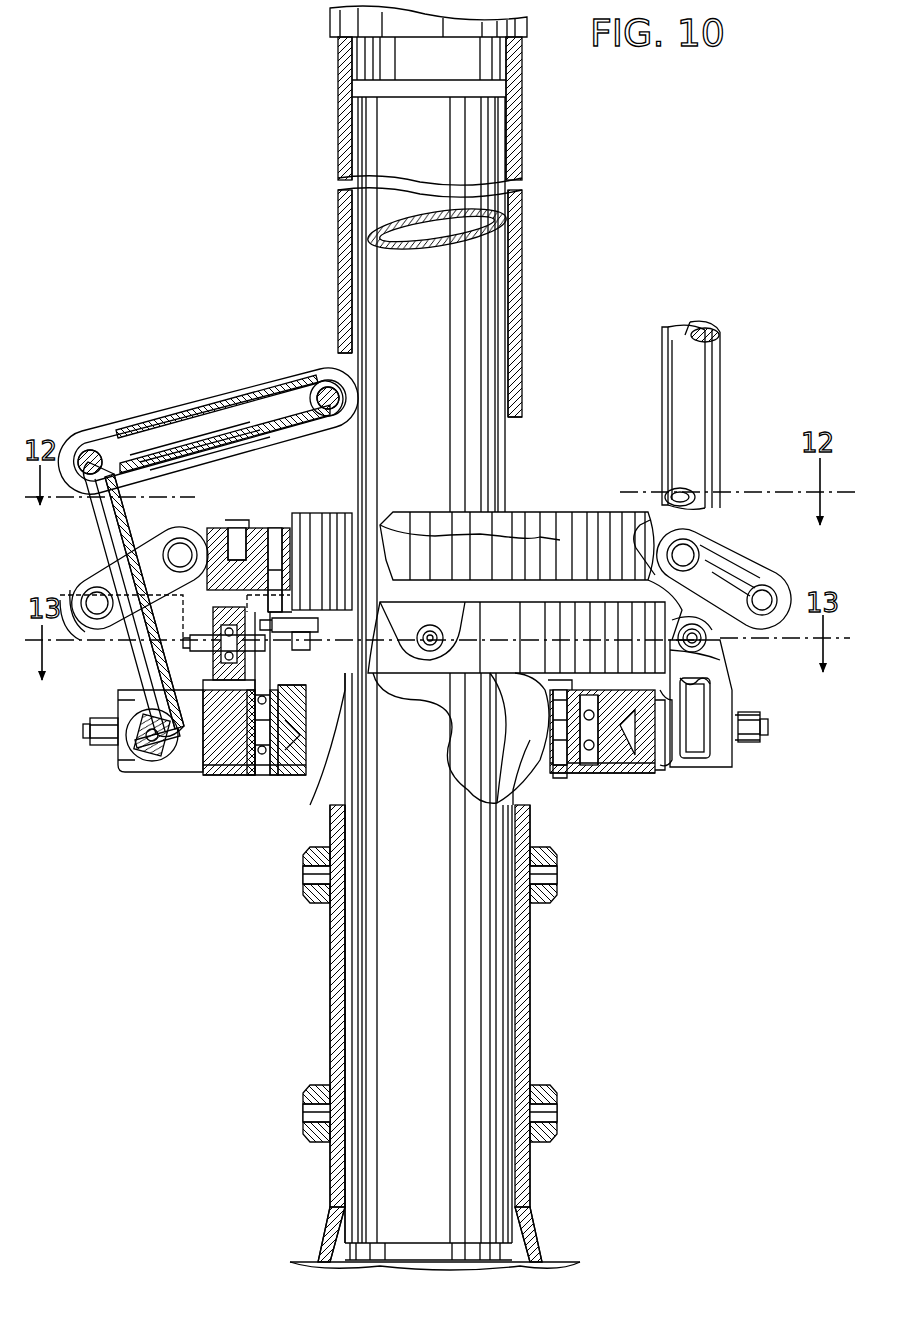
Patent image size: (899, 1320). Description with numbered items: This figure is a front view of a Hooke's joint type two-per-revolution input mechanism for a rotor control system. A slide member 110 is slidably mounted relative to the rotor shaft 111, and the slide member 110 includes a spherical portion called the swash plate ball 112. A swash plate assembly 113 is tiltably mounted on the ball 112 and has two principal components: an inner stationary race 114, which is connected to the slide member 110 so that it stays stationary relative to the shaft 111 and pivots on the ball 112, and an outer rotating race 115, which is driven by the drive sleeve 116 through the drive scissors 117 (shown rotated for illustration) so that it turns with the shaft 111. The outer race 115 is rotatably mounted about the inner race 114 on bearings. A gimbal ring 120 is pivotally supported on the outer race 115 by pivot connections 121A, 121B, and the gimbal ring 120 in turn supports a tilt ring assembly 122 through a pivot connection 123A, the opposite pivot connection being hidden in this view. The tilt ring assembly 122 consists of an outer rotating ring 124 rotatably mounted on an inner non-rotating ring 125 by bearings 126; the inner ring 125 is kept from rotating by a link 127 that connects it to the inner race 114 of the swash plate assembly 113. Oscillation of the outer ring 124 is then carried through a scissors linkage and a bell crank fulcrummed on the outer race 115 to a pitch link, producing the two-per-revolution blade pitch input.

The slide member 110 is at (530, 977).
The shaft 111 is at (428, 924).
The swash plate ball 112 is at (483, 750).
The swash plate assembly 113 is at (610, 778).
The inner stationary race 114 is at (300, 775).
The outer rotating race 115 is at (228, 770).
The drive sleeve 116 is at (522, 196).
The drive scissors 117 is at (180, 392).
The gimbal ring 120 is at (497, 660).
The pivot connection 121A is at (168, 670).
The pivot connection 121B is at (690, 660).
The tilt ring assembly 122 is at (598, 516).
The pivot connection 123A is at (431, 622).
The outer rotating ring 124 is at (432, 548).
The inner non-rotating ring 125 is at (333, 528).
The bearings 126 is at (262, 528).
The link 127 is at (318, 648).